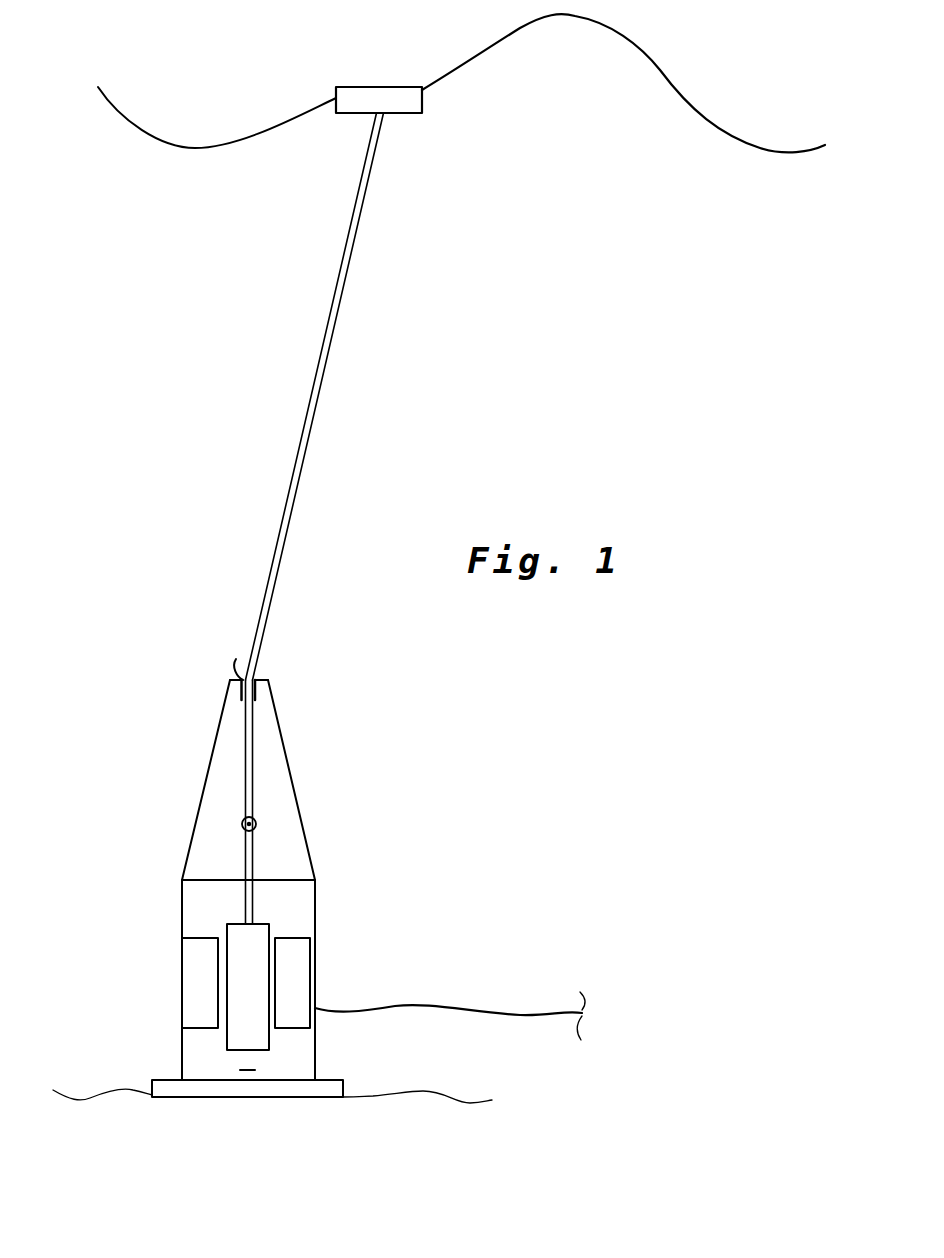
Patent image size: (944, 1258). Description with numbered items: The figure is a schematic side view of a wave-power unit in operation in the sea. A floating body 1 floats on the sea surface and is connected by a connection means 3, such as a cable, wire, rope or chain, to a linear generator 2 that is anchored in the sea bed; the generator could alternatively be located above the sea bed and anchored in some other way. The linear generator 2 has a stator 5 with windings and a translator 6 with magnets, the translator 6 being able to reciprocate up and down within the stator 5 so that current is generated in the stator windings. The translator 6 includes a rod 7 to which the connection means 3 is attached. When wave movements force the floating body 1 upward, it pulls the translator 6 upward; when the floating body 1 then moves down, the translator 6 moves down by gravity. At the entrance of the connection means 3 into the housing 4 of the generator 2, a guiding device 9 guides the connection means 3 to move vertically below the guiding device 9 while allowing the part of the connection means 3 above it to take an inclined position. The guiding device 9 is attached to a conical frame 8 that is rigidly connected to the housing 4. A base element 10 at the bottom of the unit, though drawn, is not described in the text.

The floating body 1 is at (378, 95).
The linear generator 2 is at (410, 917).
The connection means 3 is at (328, 358).
The housing 4 is at (315, 910).
The stator 5 is at (303, 973).
The translator 6 is at (255, 1037).
The rod 7 is at (243, 858).
The conical frame 8 is at (290, 772).
The guiding device 9 is at (257, 664).
The base plate 10 is at (318, 1092).